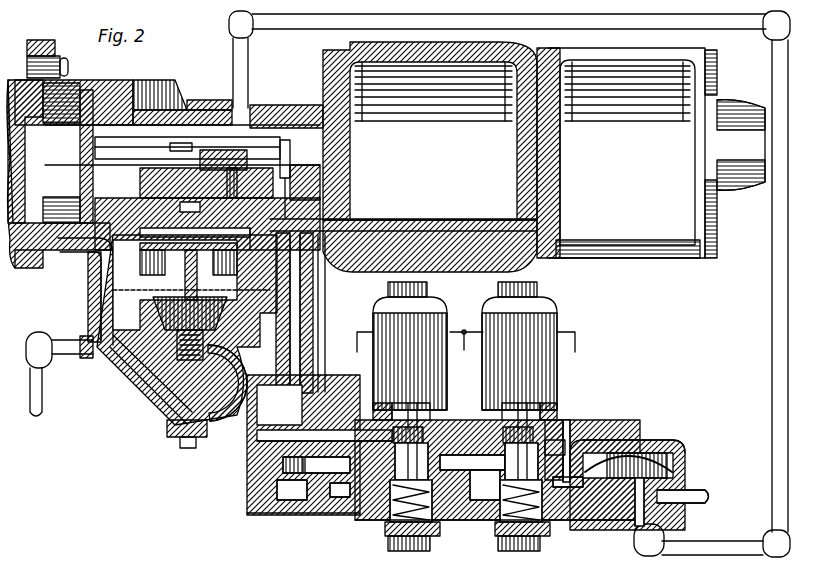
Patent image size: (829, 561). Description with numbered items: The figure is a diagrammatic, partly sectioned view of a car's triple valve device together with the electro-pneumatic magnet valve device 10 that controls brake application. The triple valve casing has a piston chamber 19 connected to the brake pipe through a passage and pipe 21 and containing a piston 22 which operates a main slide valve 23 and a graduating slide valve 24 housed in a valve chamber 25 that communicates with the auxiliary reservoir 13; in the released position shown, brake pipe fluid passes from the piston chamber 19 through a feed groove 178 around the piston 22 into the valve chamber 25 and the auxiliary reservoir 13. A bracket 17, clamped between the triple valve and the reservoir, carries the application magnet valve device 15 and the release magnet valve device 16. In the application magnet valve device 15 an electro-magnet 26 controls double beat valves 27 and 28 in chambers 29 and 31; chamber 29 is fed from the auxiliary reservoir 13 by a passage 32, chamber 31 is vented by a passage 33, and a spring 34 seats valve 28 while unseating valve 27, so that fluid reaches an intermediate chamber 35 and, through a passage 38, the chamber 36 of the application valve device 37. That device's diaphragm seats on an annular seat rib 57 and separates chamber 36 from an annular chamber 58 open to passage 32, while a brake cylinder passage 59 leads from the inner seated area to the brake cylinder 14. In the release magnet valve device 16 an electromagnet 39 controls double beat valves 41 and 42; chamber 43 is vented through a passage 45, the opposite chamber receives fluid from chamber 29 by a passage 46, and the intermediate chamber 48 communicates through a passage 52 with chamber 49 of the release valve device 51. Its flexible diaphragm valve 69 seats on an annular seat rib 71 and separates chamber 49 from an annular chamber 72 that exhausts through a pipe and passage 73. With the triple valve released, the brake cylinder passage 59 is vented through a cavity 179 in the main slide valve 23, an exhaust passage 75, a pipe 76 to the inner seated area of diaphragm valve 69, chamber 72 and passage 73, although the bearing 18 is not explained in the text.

The magnet valve device 10 is at (223, 341).
The auxiliary reservoir 13 is at (403, 157).
The brake cylinder 14 is at (651, 153).
The application magnet valve device 15 is at (373, 362).
The release magnet valve device 16 is at (560, 362).
The bracket 17 is at (200, 98).
The bearing 18 is at (160, 82).
The piston chamber 19 is at (88, 80).
The passage and pipe 21 is at (73, 252).
The piston 22 is at (40, 268).
The main slide valve 23 is at (207, 224).
The graduating slide valve 24 is at (205, 150).
The valve chamber 25 is at (252, 100).
The electro-magnet 26 is at (380, 400).
The double beat valve 27 is at (425, 430).
The double beat valve 28 is at (392, 500).
The chamber 29 is at (420, 408).
The chamber 31 is at (445, 522).
The passage 32 is at (313, 330).
The passage 33 is at (515, 525).
The spring 34 is at (390, 537).
The chamber 35 is at (423, 461).
The chamber 36 is at (327, 465).
The application valve device 37 is at (260, 513).
The passage 38 is at (360, 441).
The electromagnet 39 is at (545, 410).
The double beat valve 41 is at (572, 432).
The double beat valve 42 is at (545, 530).
The chamber 43 is at (500, 412).
The passage 45 is at (560, 425).
The passage 46 is at (503, 460).
The chamber 48 is at (560, 448).
The chamber 49 is at (665, 445).
The release valve device 51 is at (686, 455).
The passage 52 is at (497, 464).
The annular seat rib 57 is at (292, 500).
The annular chamber 58 is at (338, 497).
The brake cylinder passage 59 is at (290, 180).
The flexible diaphragm valve 69 is at (635, 455).
The annular seat rib 71 is at (633, 515).
The annular chamber 72 is at (672, 472).
The pipe and passage 73 is at (688, 492).
The exhaust passage 75 is at (212, 125).
The pipe 76 is at (758, 22).
The feed groove 178 is at (120, 100).
The cavity 179 is at (167, 152).